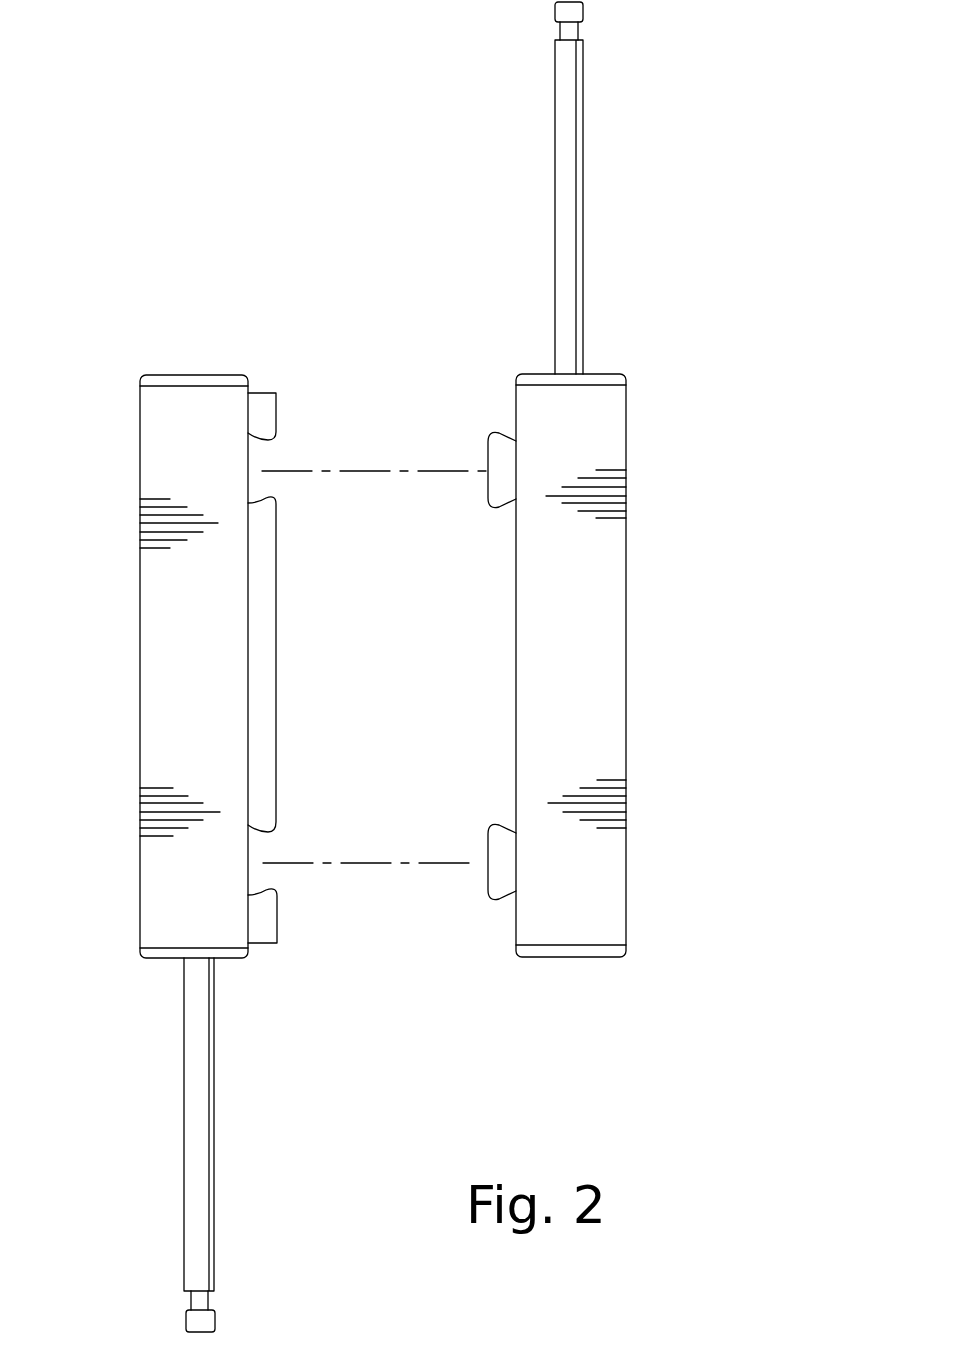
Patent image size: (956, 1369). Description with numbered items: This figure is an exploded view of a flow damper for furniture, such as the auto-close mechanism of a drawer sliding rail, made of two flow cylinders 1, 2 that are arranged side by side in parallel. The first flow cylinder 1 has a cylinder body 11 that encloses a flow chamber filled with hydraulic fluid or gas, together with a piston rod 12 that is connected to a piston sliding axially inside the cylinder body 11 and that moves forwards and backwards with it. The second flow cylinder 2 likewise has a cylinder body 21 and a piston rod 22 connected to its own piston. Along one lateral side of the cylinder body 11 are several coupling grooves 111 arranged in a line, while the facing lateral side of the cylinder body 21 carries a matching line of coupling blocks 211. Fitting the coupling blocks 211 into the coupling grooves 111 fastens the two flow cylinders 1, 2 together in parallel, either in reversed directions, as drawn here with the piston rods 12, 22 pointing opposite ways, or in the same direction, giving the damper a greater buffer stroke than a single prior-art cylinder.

The first flow cylinder 1 is at (115, 693).
The cylinder body 11 is at (140, 757).
The coupling grooves 111 is at (258, 437).
The piston rod 12 is at (185, 1108).
The second flow cylinder 2 is at (645, 712).
The cylinder body 21 is at (627, 585).
The coupling blocks 211 is at (503, 470).
The piston rod 22 is at (583, 196).